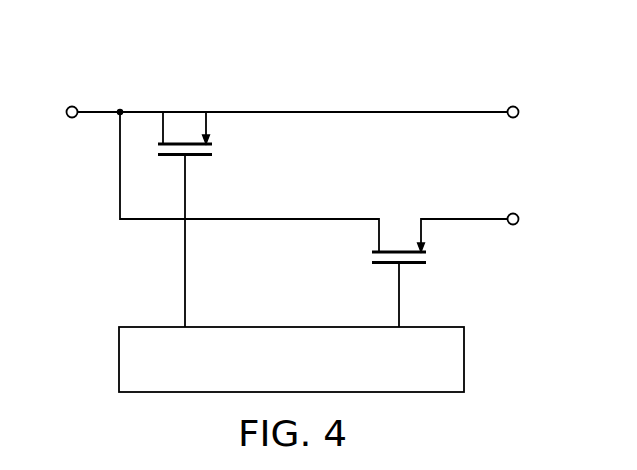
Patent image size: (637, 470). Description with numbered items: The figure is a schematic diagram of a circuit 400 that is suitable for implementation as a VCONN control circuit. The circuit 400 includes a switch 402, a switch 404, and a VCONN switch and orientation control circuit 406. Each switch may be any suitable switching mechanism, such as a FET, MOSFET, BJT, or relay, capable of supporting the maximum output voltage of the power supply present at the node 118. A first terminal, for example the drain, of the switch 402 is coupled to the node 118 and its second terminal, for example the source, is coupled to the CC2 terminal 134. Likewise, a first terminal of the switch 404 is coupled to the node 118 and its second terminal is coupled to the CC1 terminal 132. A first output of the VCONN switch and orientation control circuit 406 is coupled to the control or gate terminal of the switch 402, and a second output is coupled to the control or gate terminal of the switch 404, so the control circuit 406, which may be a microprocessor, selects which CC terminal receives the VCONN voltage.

The circuit 400 is at (217, 69).
The node 118 is at (69, 106).
The CC2 terminal 134 is at (516, 106).
The CC1 terminal 132 is at (516, 213).
The switch 402 is at (168, 158).
The switch 404 is at (414, 266).
The VCONN switch and orientation control circuit 406 is at (119, 360).